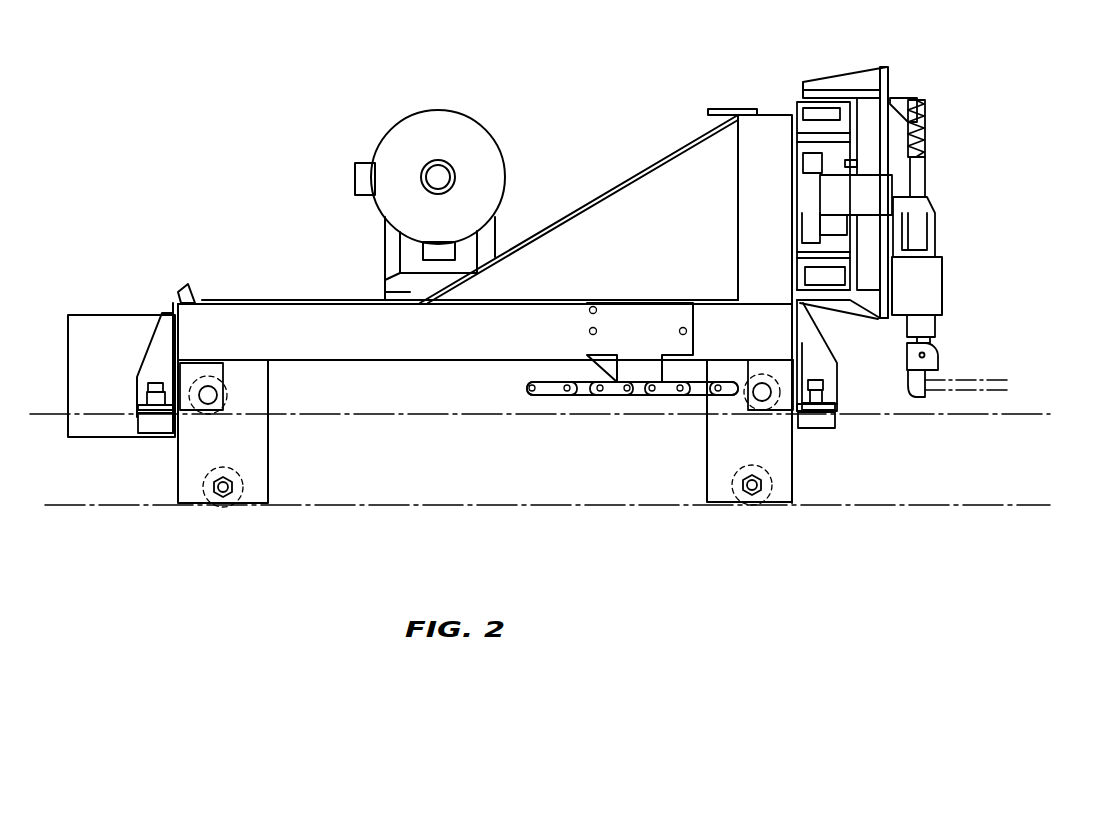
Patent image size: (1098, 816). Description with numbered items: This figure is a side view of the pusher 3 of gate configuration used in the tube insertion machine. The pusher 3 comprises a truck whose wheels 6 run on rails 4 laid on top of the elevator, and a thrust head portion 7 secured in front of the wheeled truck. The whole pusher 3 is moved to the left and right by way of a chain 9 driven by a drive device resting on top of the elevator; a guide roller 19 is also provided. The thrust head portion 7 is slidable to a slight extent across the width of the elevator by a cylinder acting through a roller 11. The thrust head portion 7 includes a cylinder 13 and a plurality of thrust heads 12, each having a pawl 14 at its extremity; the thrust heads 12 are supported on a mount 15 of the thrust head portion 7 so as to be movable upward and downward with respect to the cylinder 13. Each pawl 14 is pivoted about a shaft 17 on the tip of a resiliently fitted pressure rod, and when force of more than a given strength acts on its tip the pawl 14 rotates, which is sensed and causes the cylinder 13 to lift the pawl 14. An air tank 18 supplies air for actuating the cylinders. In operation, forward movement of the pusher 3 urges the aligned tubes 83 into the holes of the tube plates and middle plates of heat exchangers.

The pusher of gate configuration 3 is at (612, 190).
The rails 4 is at (308, 418).
The wheels 6 is at (222, 413).
The thrust head portion 7 is at (844, 81).
The chain 9 is at (553, 394).
The roller 11 is at (815, 110).
The thrust head 12 is at (940, 331).
The cylinder 13 is at (927, 184).
The pawl 14 is at (906, 354).
The mount 15 is at (890, 76).
The shaft 17 is at (940, 357).
The air tank 18 is at (389, 131).
The guide roller 19 is at (136, 422).
The tubes 83 is at (1010, 380).